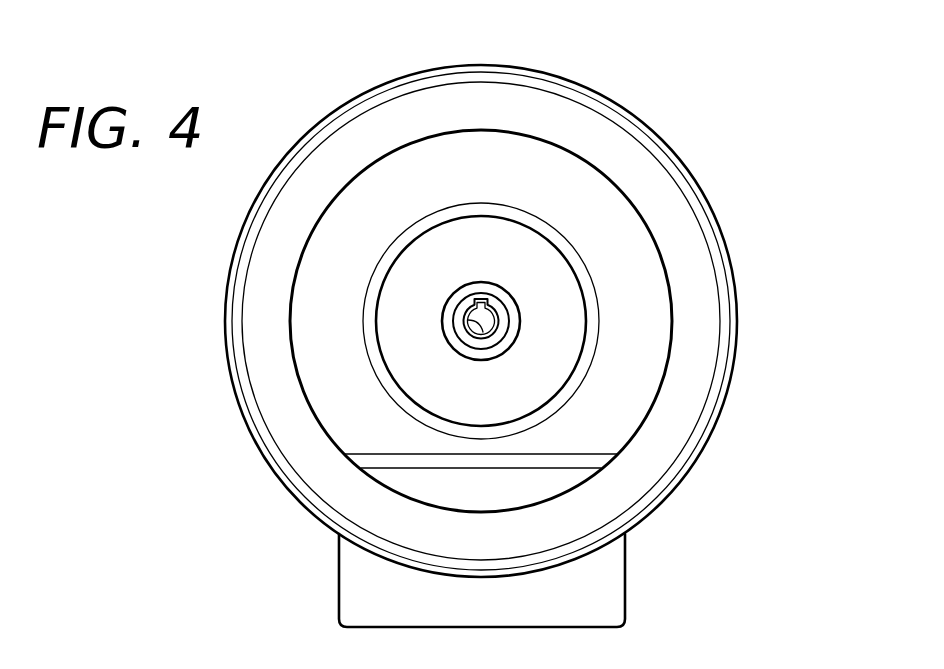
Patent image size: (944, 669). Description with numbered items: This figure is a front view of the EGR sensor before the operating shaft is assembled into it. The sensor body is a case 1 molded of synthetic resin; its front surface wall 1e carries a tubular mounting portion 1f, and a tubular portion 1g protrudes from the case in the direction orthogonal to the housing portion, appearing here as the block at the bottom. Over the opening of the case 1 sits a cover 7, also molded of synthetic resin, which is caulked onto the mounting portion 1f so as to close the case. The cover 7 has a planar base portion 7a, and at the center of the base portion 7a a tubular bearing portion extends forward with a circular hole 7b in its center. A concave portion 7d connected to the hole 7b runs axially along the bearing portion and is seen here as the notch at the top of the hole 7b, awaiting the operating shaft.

The case 1 is at (682, 150).
The front surface wall 1e is at (690, 223).
The tubular mounting portion 1f is at (593, 335).
The tubular portion 1g is at (610, 600).
The cover 7 is at (517, 250).
The planar base portion 7a is at (483, 230).
The circular hole 7b is at (468, 320).
The concave portion 7d is at (480, 297).